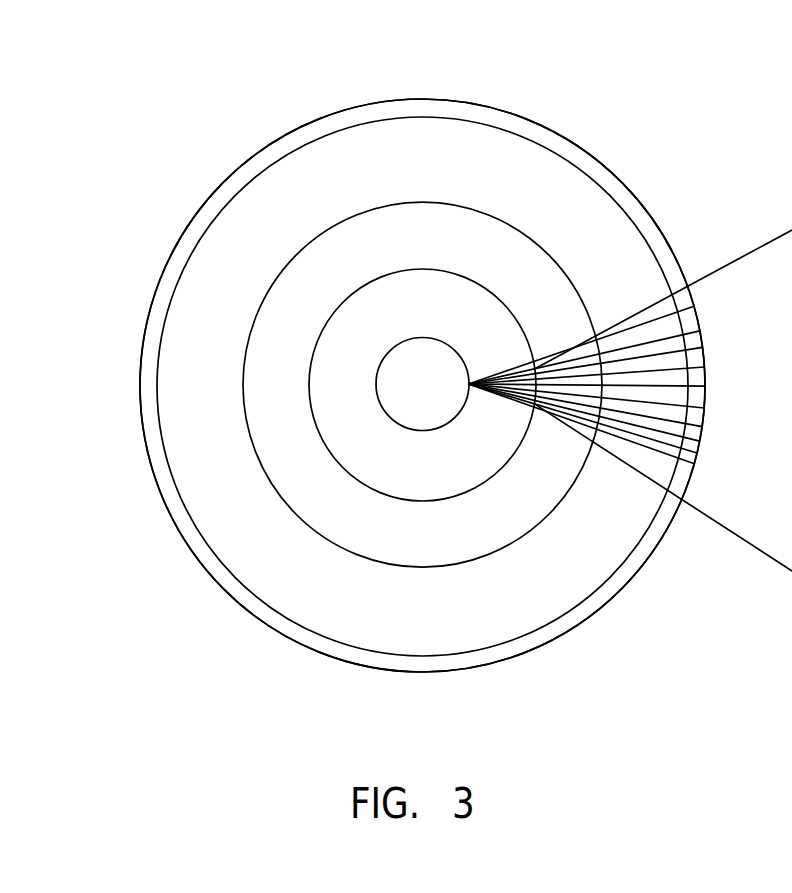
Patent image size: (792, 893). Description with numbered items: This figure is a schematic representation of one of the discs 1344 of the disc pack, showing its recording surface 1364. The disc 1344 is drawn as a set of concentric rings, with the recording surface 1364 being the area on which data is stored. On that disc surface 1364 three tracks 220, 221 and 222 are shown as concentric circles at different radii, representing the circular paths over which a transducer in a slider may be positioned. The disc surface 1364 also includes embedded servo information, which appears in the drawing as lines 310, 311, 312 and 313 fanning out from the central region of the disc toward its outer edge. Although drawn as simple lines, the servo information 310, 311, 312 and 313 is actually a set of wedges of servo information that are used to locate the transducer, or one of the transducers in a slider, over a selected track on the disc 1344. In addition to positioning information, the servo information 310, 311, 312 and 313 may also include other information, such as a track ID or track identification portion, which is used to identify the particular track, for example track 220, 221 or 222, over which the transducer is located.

The track 220 is at (338, 128).
The track 221 is at (493, 215).
The track 222 is at (347, 298).
The servo information line 310 is at (708, 409).
The servo information line 311 is at (710, 386).
The servo information line 312 is at (708, 365).
The servo information line 313 is at (703, 345).
The disc 1344 is at (218, 581).
The recording surface 1364 is at (333, 627).